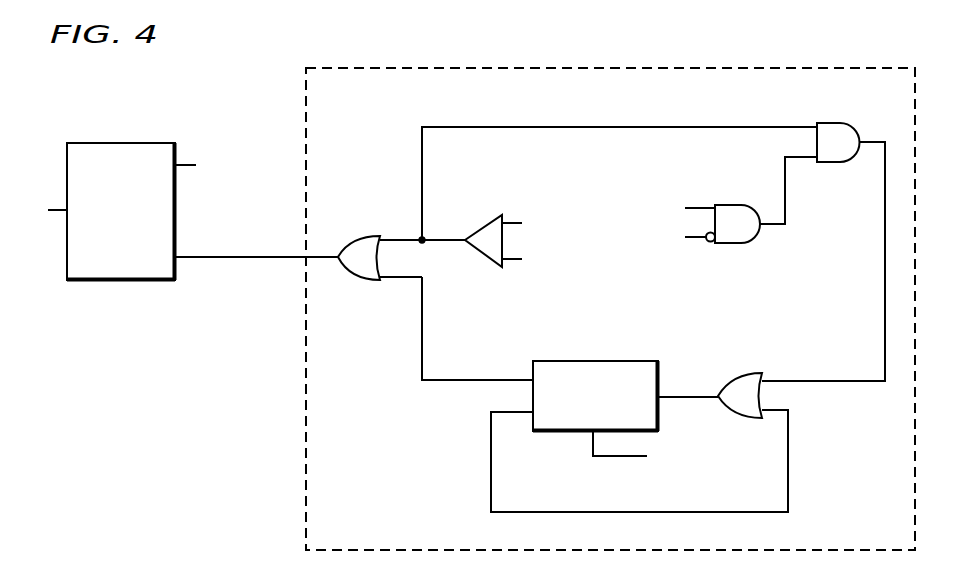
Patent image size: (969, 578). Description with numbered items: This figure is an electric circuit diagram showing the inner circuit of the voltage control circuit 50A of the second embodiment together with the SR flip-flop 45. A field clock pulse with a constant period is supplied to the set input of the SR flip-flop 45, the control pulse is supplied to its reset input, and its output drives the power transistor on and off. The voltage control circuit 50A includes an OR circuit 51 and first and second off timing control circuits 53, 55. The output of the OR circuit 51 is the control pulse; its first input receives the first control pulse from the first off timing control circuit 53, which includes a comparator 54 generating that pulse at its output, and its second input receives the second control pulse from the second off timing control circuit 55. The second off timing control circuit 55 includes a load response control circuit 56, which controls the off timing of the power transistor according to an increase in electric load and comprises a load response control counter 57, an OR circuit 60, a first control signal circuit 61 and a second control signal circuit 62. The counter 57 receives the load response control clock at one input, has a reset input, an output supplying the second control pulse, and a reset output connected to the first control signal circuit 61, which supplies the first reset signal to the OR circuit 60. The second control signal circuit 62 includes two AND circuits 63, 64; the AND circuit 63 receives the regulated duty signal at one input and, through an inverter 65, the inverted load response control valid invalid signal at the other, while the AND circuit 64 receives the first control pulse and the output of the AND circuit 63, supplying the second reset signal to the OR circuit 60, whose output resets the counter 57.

The SR flip-flop 45 is at (122, 281).
The voltage control circuit 50A is at (305, 470).
The OR circuit 51 is at (360, 282).
The first off timing control circuit 53 is at (504, 247).
The comparator 54 is at (485, 224).
The second off timing control circuit 55 is at (481, 374).
The load response control circuit 56 is at (628, 379).
The load response control counter 57 is at (593, 361).
The OR circuit 60 is at (748, 372).
The first control signal circuit 61 is at (790, 458).
The second control signal circuit 62 is at (850, 383).
The AND circuit 63 is at (682, 225).
The AND circuit 64 is at (833, 163).
The inverter 65 is at (708, 246).